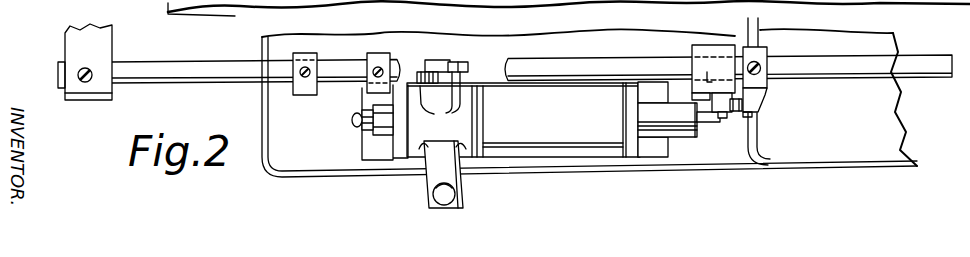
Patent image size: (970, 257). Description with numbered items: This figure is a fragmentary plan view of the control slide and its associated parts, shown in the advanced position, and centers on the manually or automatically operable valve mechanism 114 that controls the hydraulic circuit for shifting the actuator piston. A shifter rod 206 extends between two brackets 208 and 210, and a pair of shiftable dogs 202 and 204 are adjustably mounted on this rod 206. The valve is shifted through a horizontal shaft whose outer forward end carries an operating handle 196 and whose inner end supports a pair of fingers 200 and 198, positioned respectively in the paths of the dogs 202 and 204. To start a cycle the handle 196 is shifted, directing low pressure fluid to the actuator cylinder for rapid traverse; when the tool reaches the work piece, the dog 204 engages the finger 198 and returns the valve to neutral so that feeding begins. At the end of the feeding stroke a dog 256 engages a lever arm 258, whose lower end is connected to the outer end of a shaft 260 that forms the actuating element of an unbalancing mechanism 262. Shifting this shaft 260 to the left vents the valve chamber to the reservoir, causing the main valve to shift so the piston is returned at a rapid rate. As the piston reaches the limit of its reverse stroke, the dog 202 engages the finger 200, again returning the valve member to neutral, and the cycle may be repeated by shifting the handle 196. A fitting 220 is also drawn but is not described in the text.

The valve mechanism 114 is at (578, 166).
The operating handle 196 is at (453, 200).
The finger 198 is at (420, 73).
The finger 200 is at (461, 63).
The shiftable dog 202 is at (305, 53).
The shiftable dog 204 is at (380, 53).
The shifter rod 206 is at (197, 56).
The bracket 208 is at (93, 100).
The bracket 210 is at (696, 41).
The fitting 220 is at (357, 120).
The dog 256 is at (762, 97).
The lever arm 258 is at (736, 106).
The shaft 260 is at (727, 125).
The unbalancing mechanism 262 is at (691, 145).